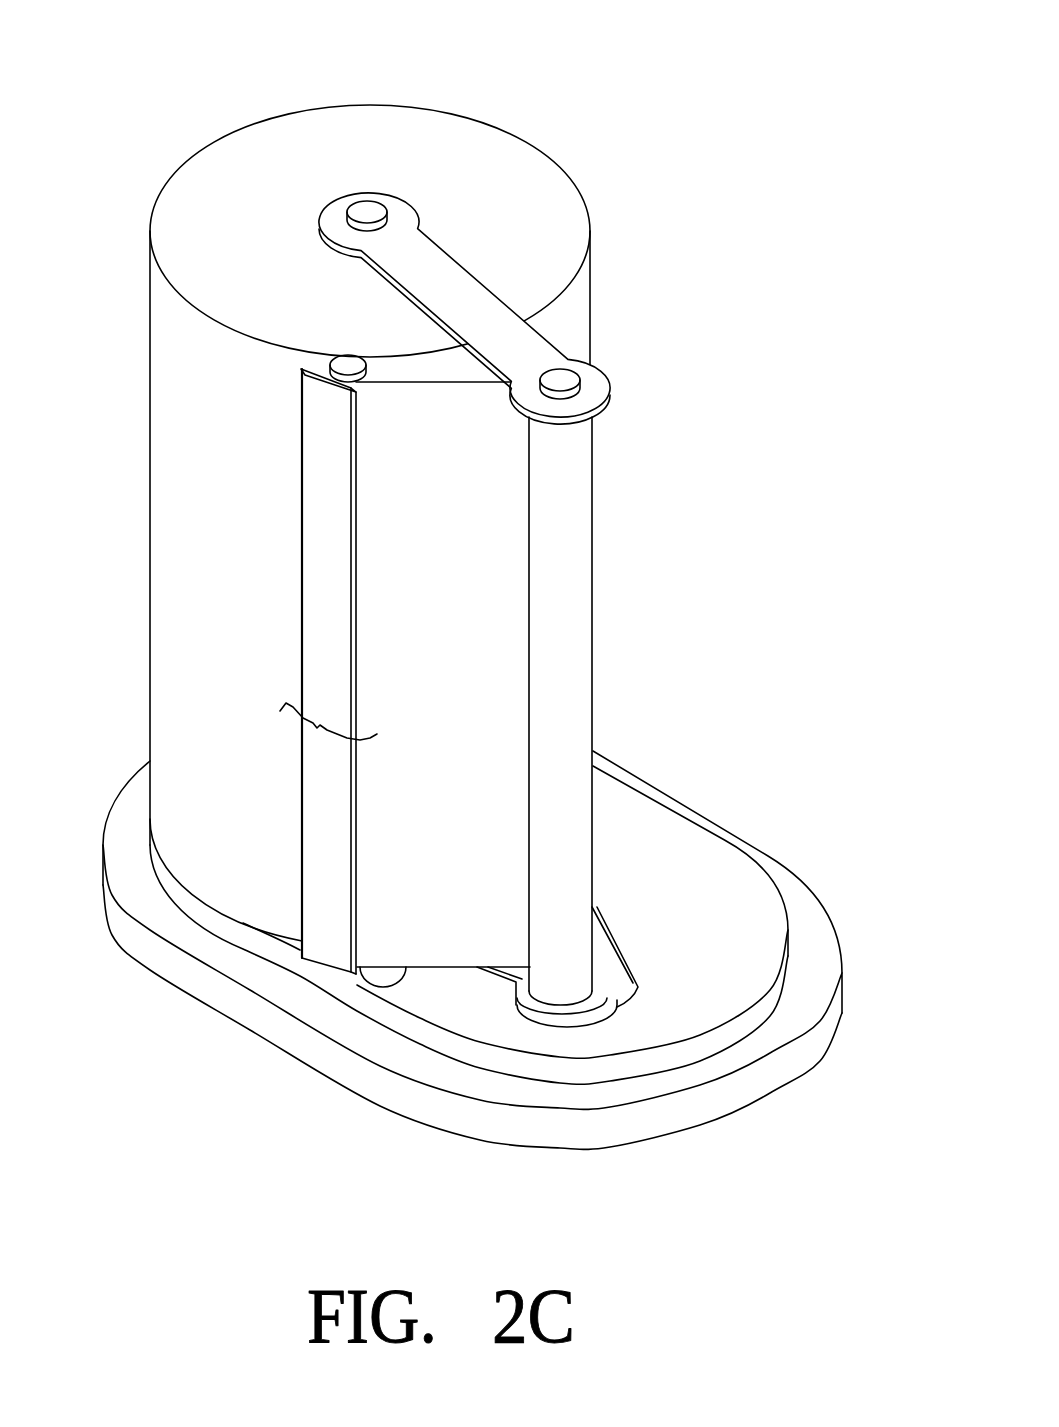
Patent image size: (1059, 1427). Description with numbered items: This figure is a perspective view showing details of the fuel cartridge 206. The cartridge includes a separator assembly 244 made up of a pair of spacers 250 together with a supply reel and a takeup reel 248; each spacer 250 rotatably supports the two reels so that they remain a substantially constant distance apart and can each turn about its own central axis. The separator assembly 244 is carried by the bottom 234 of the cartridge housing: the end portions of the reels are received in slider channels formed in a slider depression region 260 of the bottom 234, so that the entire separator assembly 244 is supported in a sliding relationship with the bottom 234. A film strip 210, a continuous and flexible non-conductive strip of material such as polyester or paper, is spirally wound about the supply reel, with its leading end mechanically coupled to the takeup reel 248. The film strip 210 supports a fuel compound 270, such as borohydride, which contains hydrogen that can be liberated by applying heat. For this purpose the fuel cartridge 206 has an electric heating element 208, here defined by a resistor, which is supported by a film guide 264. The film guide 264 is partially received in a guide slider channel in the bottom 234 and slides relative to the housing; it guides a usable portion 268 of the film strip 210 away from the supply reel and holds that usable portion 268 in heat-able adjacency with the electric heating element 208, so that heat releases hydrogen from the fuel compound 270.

The fuel cartridge 206 is at (737, 62).
The electric heating element 208 is at (327, 947).
The film strip 210 is at (479, 152).
The bottom 234 is at (797, 1053).
The separator assembly 244 is at (650, 288).
The takeup reel 248 is at (575, 574).
The spacers 250 is at (440, 280).
The slider depression region 260 is at (605, 957).
The film guide 264 is at (347, 360).
The usable portion 268 is at (315, 727).
The fuel compound 270 is at (181, 494).